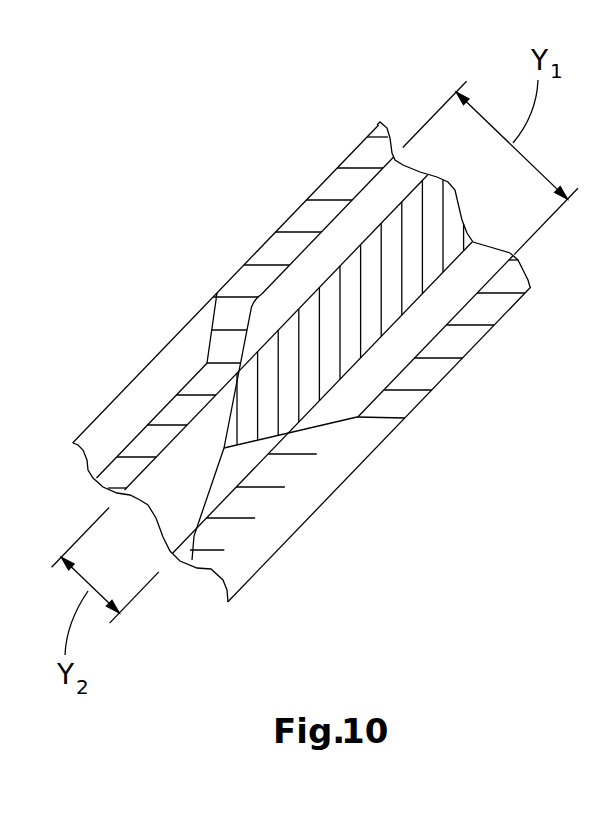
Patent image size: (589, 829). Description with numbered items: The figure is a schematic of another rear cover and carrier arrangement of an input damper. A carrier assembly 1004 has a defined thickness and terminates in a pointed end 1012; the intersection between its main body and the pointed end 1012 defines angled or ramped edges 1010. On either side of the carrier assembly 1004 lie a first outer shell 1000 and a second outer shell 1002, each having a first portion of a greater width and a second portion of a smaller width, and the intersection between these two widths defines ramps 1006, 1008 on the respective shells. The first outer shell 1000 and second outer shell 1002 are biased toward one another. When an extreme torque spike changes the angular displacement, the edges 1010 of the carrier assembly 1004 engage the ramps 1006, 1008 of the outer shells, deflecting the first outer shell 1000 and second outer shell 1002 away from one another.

The first outer shell 1000 is at (170, 370).
The second outer shell 1002 is at (327, 478).
The carrier assembly 1004 is at (395, 237).
The ramp 1006 is at (252, 334).
The ramp 1008 is at (334, 417).
The angled or ramped edges 1010 is at (220, 413).
The pointed end 1012 is at (192, 560).